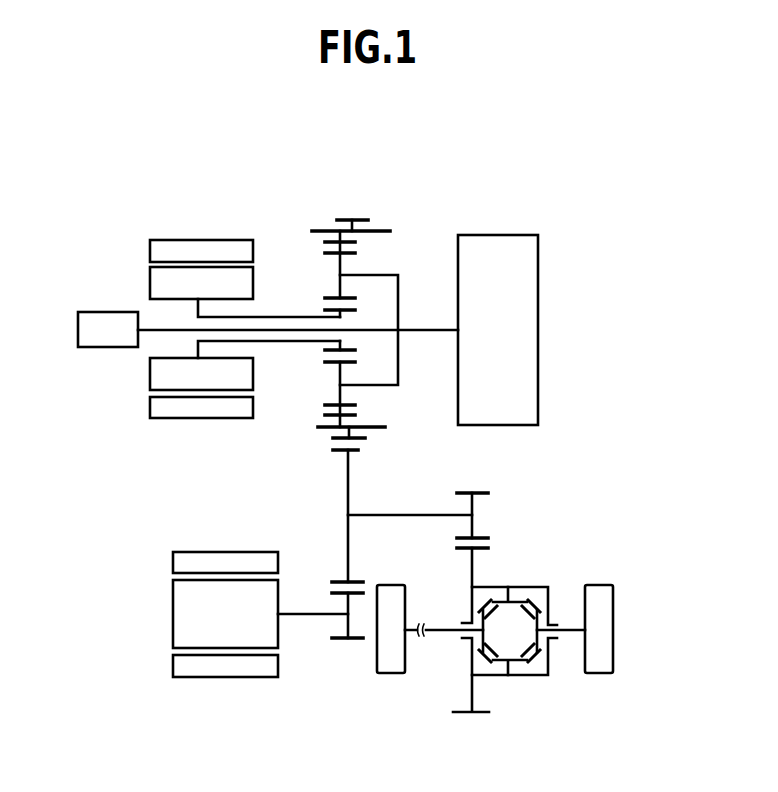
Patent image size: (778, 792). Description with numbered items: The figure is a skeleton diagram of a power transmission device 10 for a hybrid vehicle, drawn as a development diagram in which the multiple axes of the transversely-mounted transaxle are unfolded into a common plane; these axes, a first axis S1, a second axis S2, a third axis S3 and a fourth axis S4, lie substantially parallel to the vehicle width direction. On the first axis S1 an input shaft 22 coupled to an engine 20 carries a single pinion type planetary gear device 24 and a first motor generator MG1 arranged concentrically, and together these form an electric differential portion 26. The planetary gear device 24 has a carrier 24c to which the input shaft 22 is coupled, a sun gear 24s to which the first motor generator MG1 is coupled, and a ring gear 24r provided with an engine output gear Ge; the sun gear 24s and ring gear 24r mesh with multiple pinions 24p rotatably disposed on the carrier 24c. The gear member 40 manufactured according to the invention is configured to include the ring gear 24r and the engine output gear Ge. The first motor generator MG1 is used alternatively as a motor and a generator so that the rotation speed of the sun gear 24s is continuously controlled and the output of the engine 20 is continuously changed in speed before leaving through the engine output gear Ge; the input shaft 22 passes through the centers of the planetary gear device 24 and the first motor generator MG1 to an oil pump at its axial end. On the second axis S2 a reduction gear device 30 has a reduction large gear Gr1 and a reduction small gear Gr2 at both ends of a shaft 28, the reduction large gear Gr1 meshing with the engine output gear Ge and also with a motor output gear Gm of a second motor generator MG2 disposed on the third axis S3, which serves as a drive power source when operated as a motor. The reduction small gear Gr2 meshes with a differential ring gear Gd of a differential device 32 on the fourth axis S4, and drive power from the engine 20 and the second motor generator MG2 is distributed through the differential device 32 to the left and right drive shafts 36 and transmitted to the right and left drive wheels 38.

The power transmission device 10 is at (513, 125).
The engine 20 is at (530, 285).
The input shaft 22 is at (430, 333).
The planetary gear device 24 is at (283, 418).
The carrier 24c is at (375, 273).
The pinions 24p is at (322, 408).
The ring gear 24r is at (328, 245).
The sun gear 24s is at (322, 306).
The electric differential portion 26 is at (370, 178).
The shaft 28 is at (396, 518).
The reduction gear device 30 is at (535, 505).
The differential device 32 is at (540, 689).
The drive shafts 36 is at (442, 633).
The drive wheels 38 is at (391, 666).
The gear member 40 is at (302, 222).
The engine output gear Ge is at (358, 218).
The differential ring gear Gd is at (488, 548).
The motor output gear Gm is at (343, 640).
The reduction large gear Gr1 is at (358, 445).
The reduction small gear Gr2 is at (478, 492).
The first axis S1 is at (94, 329).
The second axis S2 is at (330, 516).
The third axis S3 is at (247, 618).
The fourth axis S4 is at (633, 636).
The first motor generator MG1 is at (245, 318).
The second motor generator MG2 is at (225, 604).